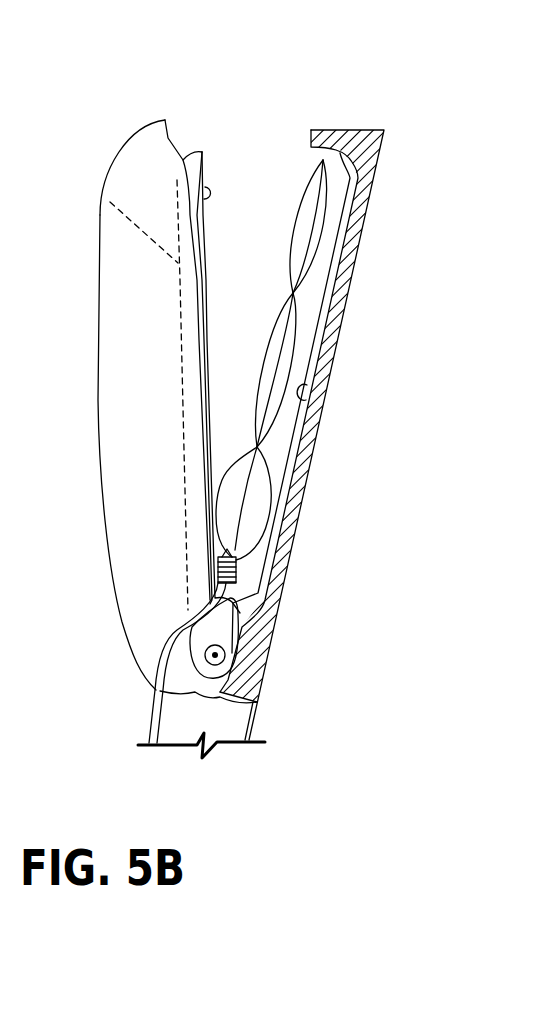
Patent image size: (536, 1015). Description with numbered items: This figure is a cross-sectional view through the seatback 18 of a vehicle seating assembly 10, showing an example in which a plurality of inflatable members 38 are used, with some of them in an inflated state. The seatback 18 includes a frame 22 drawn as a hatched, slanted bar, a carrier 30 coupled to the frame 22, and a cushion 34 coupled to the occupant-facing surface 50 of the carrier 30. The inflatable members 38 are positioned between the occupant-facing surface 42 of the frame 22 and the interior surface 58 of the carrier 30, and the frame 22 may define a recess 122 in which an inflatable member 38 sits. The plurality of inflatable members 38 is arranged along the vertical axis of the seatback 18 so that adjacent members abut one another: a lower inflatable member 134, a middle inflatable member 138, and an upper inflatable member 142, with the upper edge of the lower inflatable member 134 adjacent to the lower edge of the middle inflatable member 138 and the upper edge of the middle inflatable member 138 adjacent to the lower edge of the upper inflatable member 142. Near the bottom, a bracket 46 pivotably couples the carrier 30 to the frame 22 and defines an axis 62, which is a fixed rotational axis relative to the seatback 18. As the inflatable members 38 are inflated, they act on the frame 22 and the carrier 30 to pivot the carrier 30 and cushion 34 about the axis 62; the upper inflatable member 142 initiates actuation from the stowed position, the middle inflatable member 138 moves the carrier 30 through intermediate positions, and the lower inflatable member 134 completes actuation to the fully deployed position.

The vehicle seating assembly 10 is at (75, 100).
The seatback 18 is at (376, 188).
The frame 22 is at (252, 657).
The carrier 30 is at (191, 146).
The cushion 34 is at (98, 388).
The inflatable member 38 is at (322, 233).
The occupant-facing surface 42 is at (200, 702).
The bracket 46 is at (258, 688).
The occupant-facing surface 50 is at (97, 186).
The interior surface 58 is at (206, 188).
The axis 62 is at (215, 660).
The recess 122 is at (307, 397).
The lower inflatable member 134 is at (248, 523).
The middle inflatable member 138 is at (292, 323).
The upper inflatable member 142 is at (318, 208).